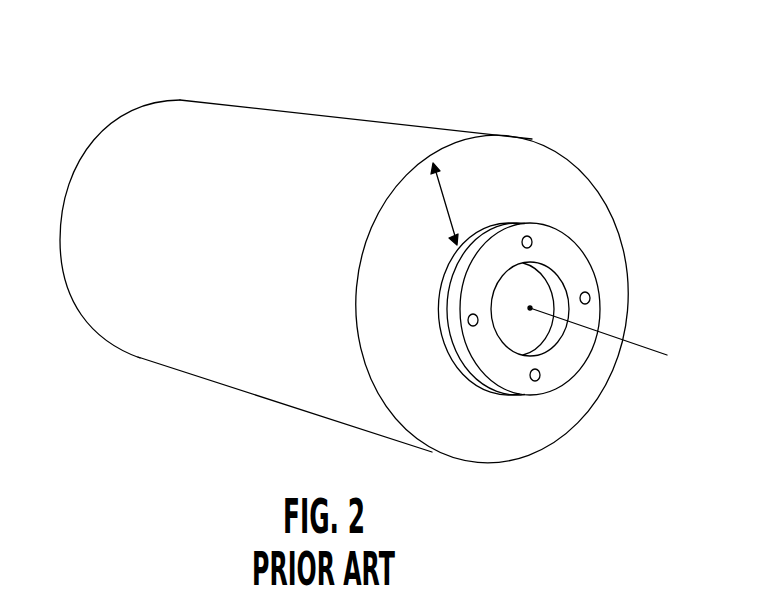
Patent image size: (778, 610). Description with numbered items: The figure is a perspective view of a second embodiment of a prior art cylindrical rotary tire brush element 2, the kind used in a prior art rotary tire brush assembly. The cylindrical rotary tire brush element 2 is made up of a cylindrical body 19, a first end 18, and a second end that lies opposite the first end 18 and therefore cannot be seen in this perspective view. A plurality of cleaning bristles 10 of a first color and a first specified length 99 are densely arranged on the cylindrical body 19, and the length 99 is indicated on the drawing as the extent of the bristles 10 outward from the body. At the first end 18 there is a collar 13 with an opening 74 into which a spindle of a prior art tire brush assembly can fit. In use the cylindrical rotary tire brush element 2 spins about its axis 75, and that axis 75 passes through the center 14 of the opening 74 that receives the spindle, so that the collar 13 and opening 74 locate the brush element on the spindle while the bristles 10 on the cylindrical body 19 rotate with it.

The cylindrical rotary tire brush element 2 is at (340, 249).
The cleaning bristles 10 is at (428, 145).
The first specified length 99 is at (450, 208).
The opening 74 is at (528, 277).
The center 14 is at (530, 308).
The collar 13 is at (444, 289).
The axis 75 is at (650, 348).
The cylindrical body 19 is at (457, 300).
The first end 18 is at (433, 348).